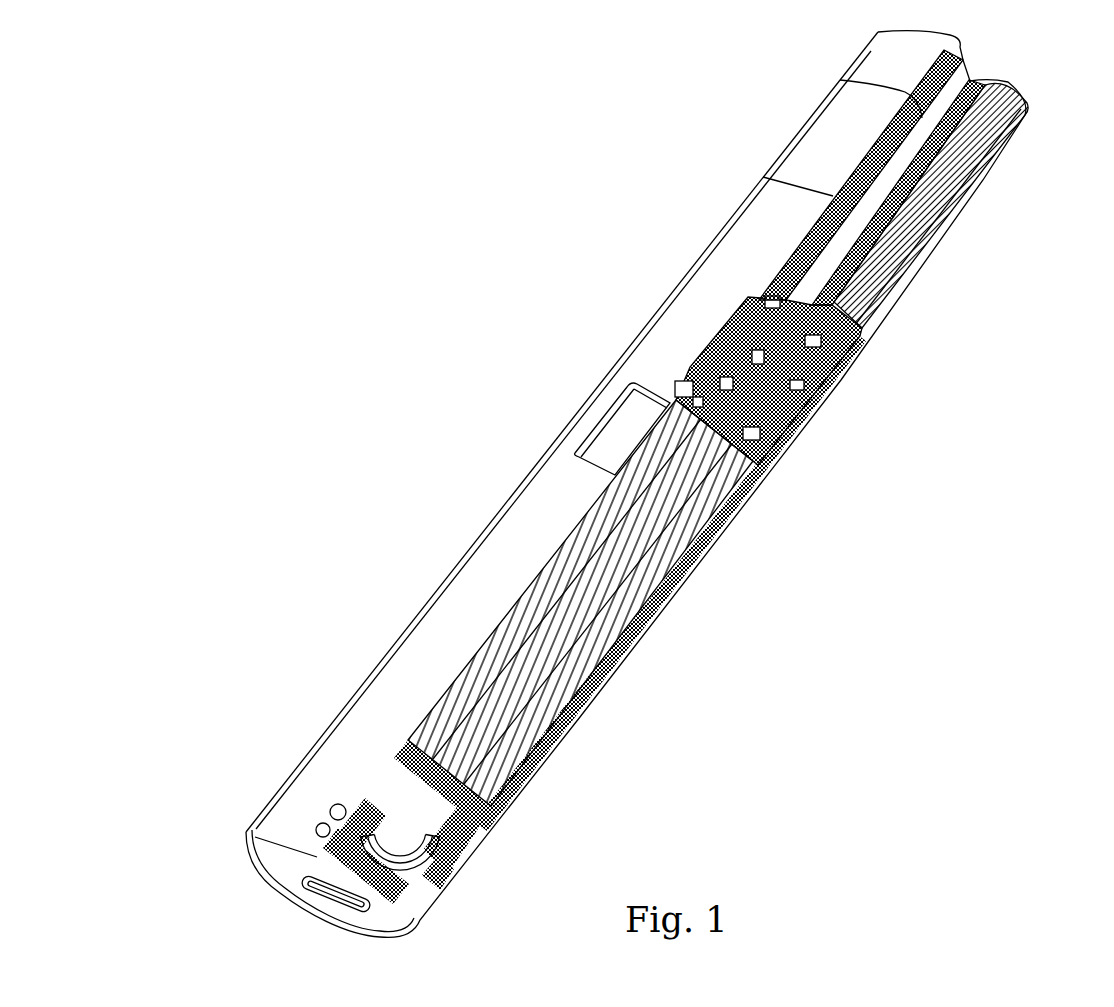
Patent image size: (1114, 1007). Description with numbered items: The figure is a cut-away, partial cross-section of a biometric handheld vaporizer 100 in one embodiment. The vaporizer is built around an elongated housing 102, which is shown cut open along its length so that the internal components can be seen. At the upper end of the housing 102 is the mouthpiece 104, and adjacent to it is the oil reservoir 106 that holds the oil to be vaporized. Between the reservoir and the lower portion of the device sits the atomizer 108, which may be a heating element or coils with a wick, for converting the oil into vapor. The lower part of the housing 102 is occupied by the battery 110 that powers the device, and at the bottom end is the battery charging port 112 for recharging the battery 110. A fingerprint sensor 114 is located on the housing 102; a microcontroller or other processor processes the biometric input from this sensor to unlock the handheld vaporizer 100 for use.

The handheld vaporizer 100 is at (497, 186).
The housing 102 is at (563, 489).
The mouthpiece 104 is at (950, 40).
The oil reservoir 106 is at (833, 159).
The atomizer 108 is at (807, 337).
The battery 110 is at (560, 667).
The battery charging port 112 is at (303, 893).
The fingerprint sensor 114 is at (628, 411).